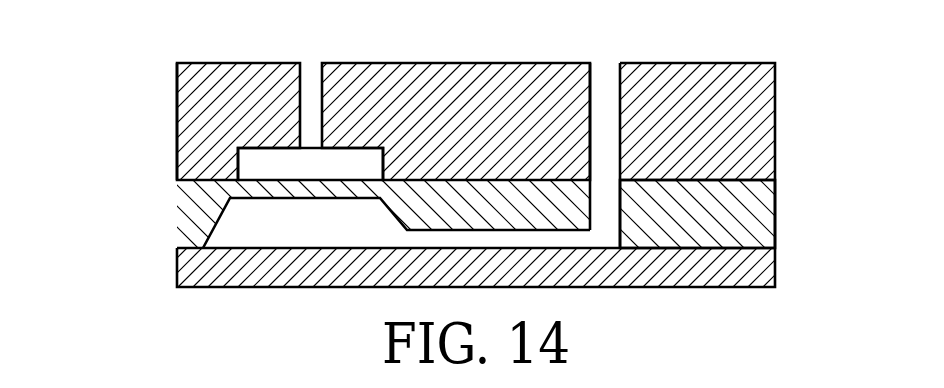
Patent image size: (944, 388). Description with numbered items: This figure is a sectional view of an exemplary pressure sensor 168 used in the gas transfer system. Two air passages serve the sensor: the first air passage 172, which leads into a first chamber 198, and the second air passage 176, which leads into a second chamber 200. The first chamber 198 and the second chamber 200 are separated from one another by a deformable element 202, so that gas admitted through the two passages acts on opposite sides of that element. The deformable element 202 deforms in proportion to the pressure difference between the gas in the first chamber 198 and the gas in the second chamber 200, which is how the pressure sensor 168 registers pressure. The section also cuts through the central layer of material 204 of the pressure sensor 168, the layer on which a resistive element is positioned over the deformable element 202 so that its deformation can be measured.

The pressure sensor 168 is at (143, 108).
The first air passage 172 is at (312, 72).
The second air passage 176 is at (607, 77).
The first chamber 198 is at (370, 165).
The second chamber 200 is at (282, 222).
The deformable element 202 is at (283, 190).
The central layer of material 204 is at (737, 220).